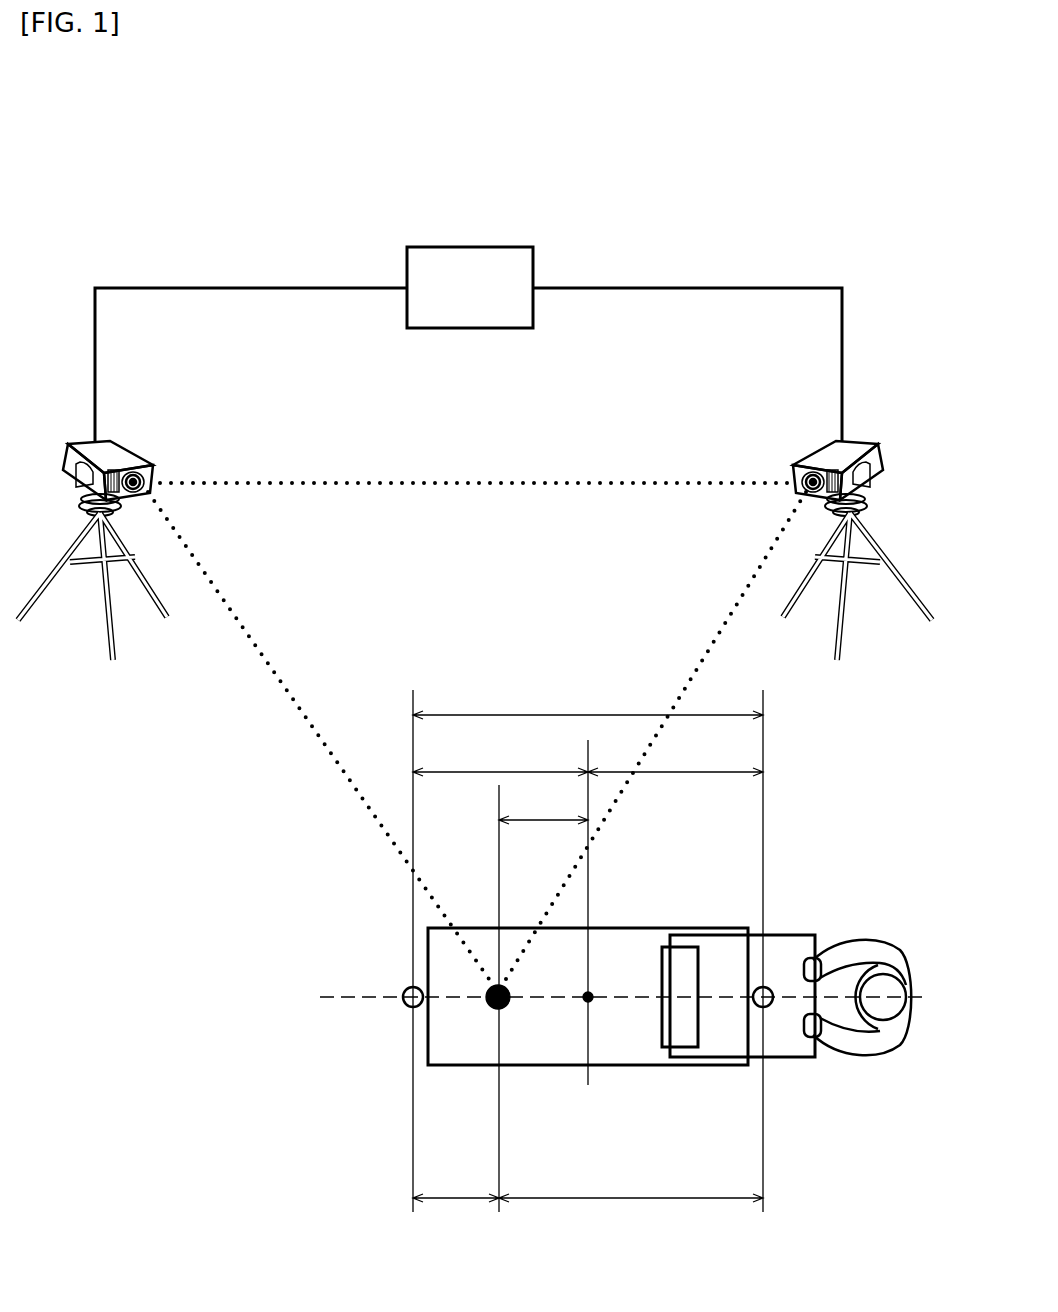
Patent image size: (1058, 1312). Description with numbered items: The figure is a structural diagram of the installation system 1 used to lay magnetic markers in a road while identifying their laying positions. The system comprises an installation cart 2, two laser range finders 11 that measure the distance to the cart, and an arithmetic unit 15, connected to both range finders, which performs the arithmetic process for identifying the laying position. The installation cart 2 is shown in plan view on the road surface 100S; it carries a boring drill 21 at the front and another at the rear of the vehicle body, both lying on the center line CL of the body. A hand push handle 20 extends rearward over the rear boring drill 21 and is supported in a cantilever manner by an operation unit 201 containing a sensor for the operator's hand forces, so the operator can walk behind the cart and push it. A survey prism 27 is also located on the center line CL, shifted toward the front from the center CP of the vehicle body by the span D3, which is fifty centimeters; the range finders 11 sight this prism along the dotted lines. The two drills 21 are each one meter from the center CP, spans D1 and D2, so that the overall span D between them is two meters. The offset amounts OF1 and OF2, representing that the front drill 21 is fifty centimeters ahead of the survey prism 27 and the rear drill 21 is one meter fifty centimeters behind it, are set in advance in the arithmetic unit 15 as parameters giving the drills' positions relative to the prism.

The installation system 1 is at (790, 265).
The arithmetic unit 15 is at (487, 265).
The laser range finder 11 is at (122, 458).
The road surface 100S is at (347, 897).
The center line CL is at (350, 997).
The installation cart 2 is at (678, 1085).
The operation unit 201 is at (675, 1008).
The hand push handle 20 is at (807, 983).
The boring drill 21 is at (408, 1008).
The survey prism 27 is at (492, 1010).
The center CP is at (586, 1004).
The span D is at (588, 944).
The span D1 is at (500, 909).
The span D2 is at (675, 755).
The span D3 is at (543, 997).
The offset amount OF1 is at (456, 1183).
The offset amount OF2 is at (631, 1183).